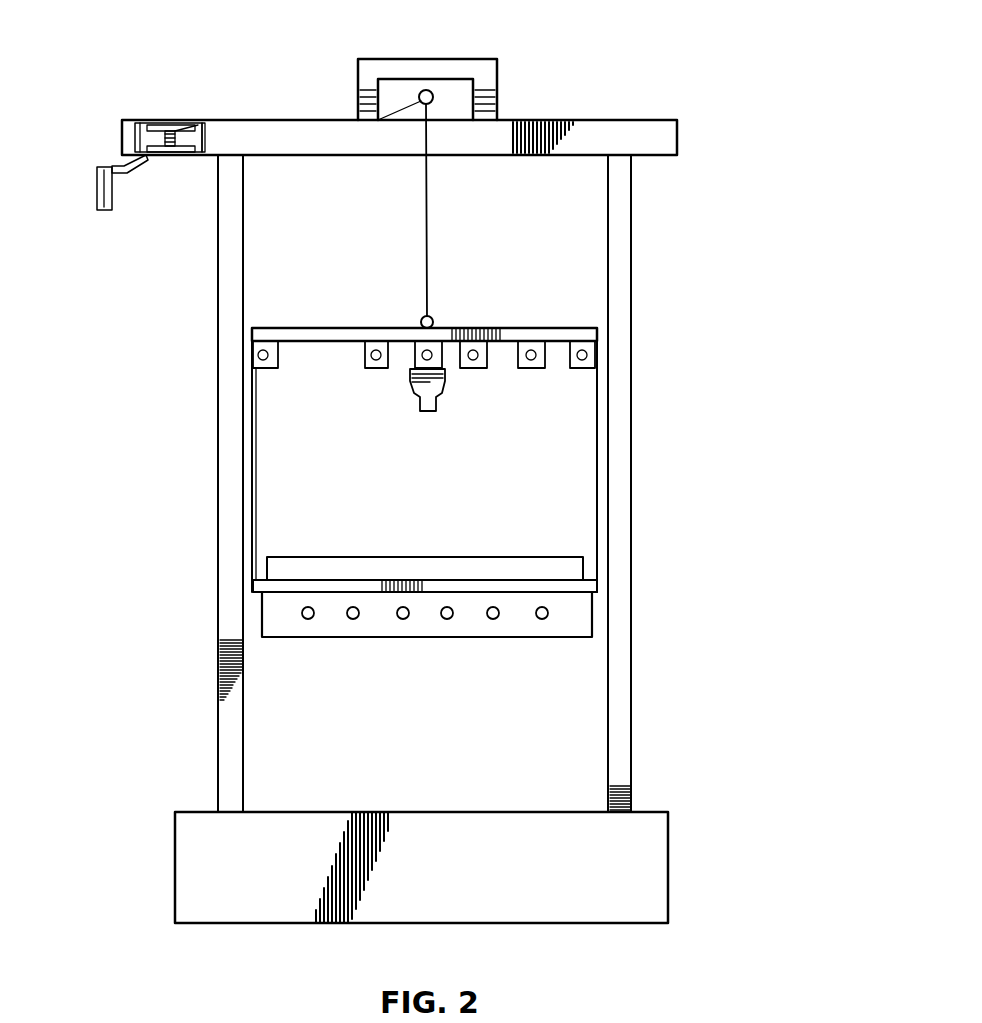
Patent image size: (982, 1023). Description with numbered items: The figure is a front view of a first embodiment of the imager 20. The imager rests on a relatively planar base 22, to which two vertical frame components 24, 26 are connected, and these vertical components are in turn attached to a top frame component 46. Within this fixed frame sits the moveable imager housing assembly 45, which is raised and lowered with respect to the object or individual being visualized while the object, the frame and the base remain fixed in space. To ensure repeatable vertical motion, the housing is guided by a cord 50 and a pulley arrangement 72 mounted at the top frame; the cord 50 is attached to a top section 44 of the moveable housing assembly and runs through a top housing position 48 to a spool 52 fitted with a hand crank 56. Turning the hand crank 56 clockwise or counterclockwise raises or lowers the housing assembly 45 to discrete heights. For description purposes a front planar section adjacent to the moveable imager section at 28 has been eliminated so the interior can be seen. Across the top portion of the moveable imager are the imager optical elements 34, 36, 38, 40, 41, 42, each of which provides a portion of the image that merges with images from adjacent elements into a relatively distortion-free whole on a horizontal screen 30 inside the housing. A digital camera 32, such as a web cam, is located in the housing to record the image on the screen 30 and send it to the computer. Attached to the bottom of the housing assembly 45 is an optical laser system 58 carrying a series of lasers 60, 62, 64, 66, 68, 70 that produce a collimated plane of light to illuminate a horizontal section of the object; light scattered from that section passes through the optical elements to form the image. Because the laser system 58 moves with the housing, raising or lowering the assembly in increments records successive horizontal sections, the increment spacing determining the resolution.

The imager 20 is at (660, 262).
The base 22 is at (670, 862).
The vertical frame component 24 is at (634, 583).
The vertical frame component 26 is at (217, 605).
The front planar section 28 is at (252, 465).
The horizontal screen 30 is at (535, 556).
The digital camera 32 is at (418, 404).
The imager optical element 34 is at (258, 355).
The imager optical element 36 is at (376, 340).
The imager optical element 38 is at (436, 342).
The imager optical element 40 is at (485, 342).
The imager optical element 41 is at (532, 370).
The imager optical element 42 is at (590, 358).
The top section 44 is at (592, 318).
The moveable imager housing assembly 45 is at (587, 447).
The top frame component 46 is at (625, 130).
The top housing position 48 is at (500, 80).
The cord 50 is at (430, 245).
The spool 52 is at (173, 121).
The hand crank 56 is at (95, 185).
The optical laser system 58 is at (433, 638).
The laser 60 is at (308, 620).
The laser 62 is at (353, 620).
The laser 64 is at (403, 620).
The laser 66 is at (447, 620).
The laser 68 is at (493, 620).
The laser 70 is at (542, 620).
The pulley arrangement 72 is at (425, 90).